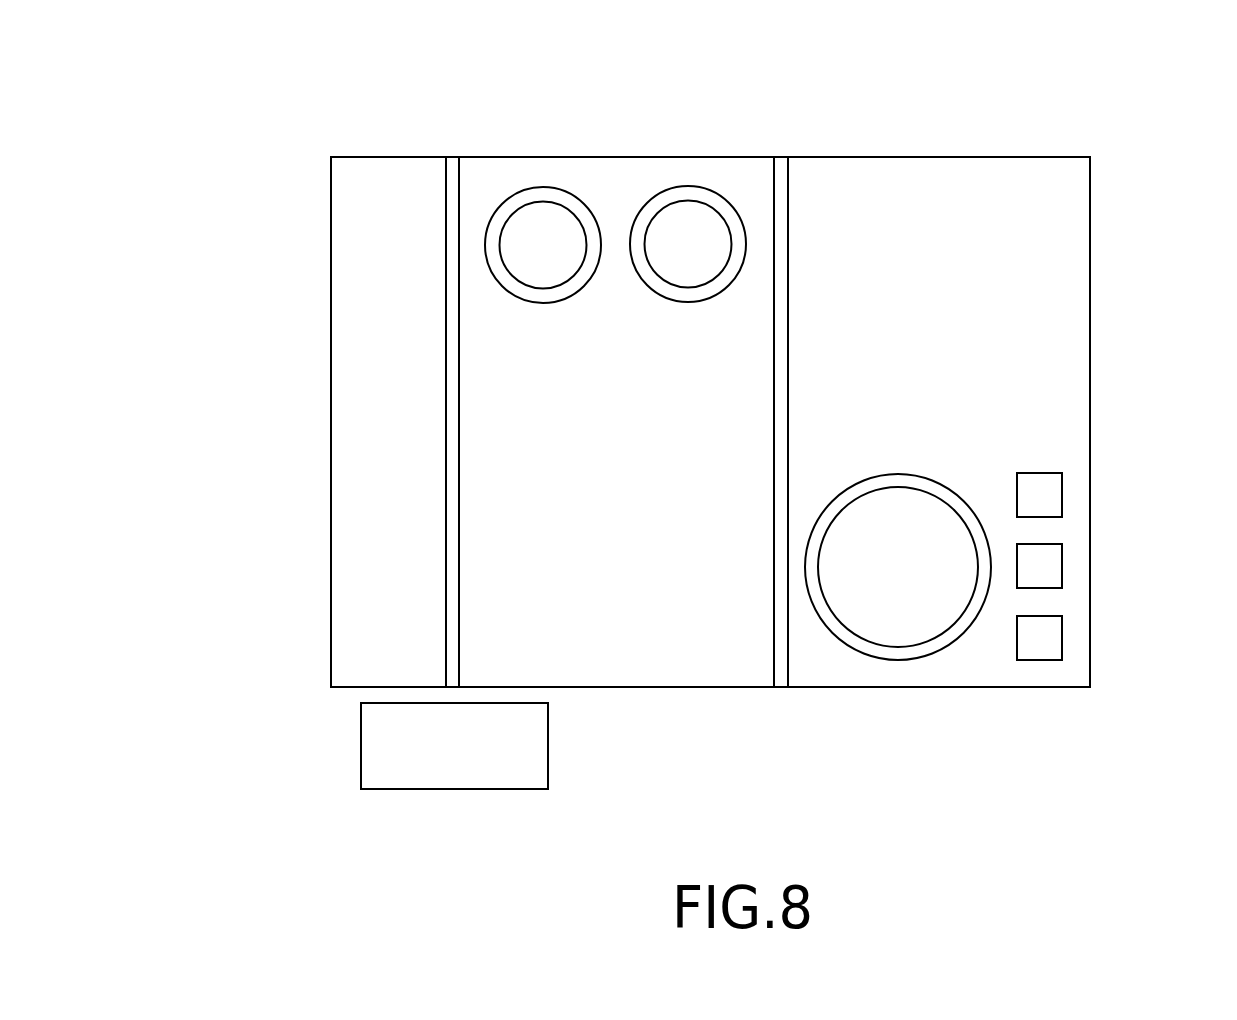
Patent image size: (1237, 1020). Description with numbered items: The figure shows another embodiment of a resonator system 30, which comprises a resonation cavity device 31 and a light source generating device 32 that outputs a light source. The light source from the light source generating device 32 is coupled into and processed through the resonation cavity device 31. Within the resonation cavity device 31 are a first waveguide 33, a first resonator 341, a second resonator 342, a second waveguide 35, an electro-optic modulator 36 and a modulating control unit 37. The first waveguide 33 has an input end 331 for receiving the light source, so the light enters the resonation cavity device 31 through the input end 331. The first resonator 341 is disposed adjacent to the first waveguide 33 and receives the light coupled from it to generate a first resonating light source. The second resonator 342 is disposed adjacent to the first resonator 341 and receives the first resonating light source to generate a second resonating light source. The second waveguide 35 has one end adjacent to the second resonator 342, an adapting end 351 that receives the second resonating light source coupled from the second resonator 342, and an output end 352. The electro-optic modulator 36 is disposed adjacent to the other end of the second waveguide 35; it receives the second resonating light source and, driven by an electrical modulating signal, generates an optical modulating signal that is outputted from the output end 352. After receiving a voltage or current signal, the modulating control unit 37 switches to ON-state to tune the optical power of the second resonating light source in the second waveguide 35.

The resonator system 30 is at (1161, 823).
The resonation cavity device 31 is at (327, 340).
The light source generating device 32 is at (365, 753).
The first waveguide 33 is at (447, 466).
The input end 331 is at (455, 672).
The first resonator 341 is at (528, 203).
The second resonator 342 is at (687, 203).
The second waveguide 35 is at (789, 383).
The adapting end 351 is at (781, 296).
The output end 352 is at (782, 672).
The electro-optic modulator 36 is at (876, 645).
The modulating control unit 37 is at (1073, 487).